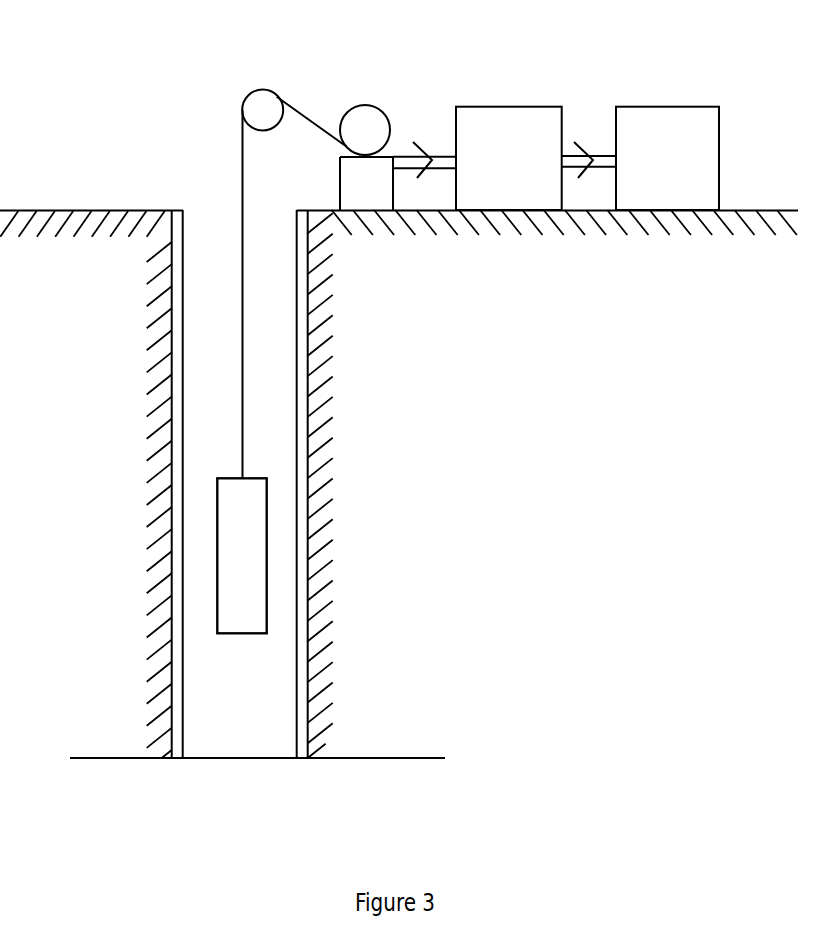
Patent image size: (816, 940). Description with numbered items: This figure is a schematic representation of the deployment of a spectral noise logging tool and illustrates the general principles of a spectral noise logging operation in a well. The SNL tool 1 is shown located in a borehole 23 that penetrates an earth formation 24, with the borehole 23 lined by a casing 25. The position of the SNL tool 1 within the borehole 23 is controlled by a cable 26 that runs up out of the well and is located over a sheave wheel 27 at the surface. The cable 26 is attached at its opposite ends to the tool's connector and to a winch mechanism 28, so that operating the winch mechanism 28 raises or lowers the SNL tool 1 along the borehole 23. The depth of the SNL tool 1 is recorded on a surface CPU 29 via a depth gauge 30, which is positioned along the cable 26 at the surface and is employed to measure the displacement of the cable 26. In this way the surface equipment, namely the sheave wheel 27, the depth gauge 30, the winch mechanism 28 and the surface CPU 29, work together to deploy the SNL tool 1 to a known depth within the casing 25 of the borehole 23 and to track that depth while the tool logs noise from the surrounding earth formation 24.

The SNL tool 1 is at (217, 558).
The borehole 23 is at (240, 724).
The earth formation 24 is at (398, 484).
The casing 25 is at (308, 370).
The cable 26 is at (242, 193).
The sheave wheel 27 is at (262, 106).
The winch mechanism 28 is at (520, 107).
The surface CPU 29 is at (667, 107).
The depth gauge 30 is at (363, 127).